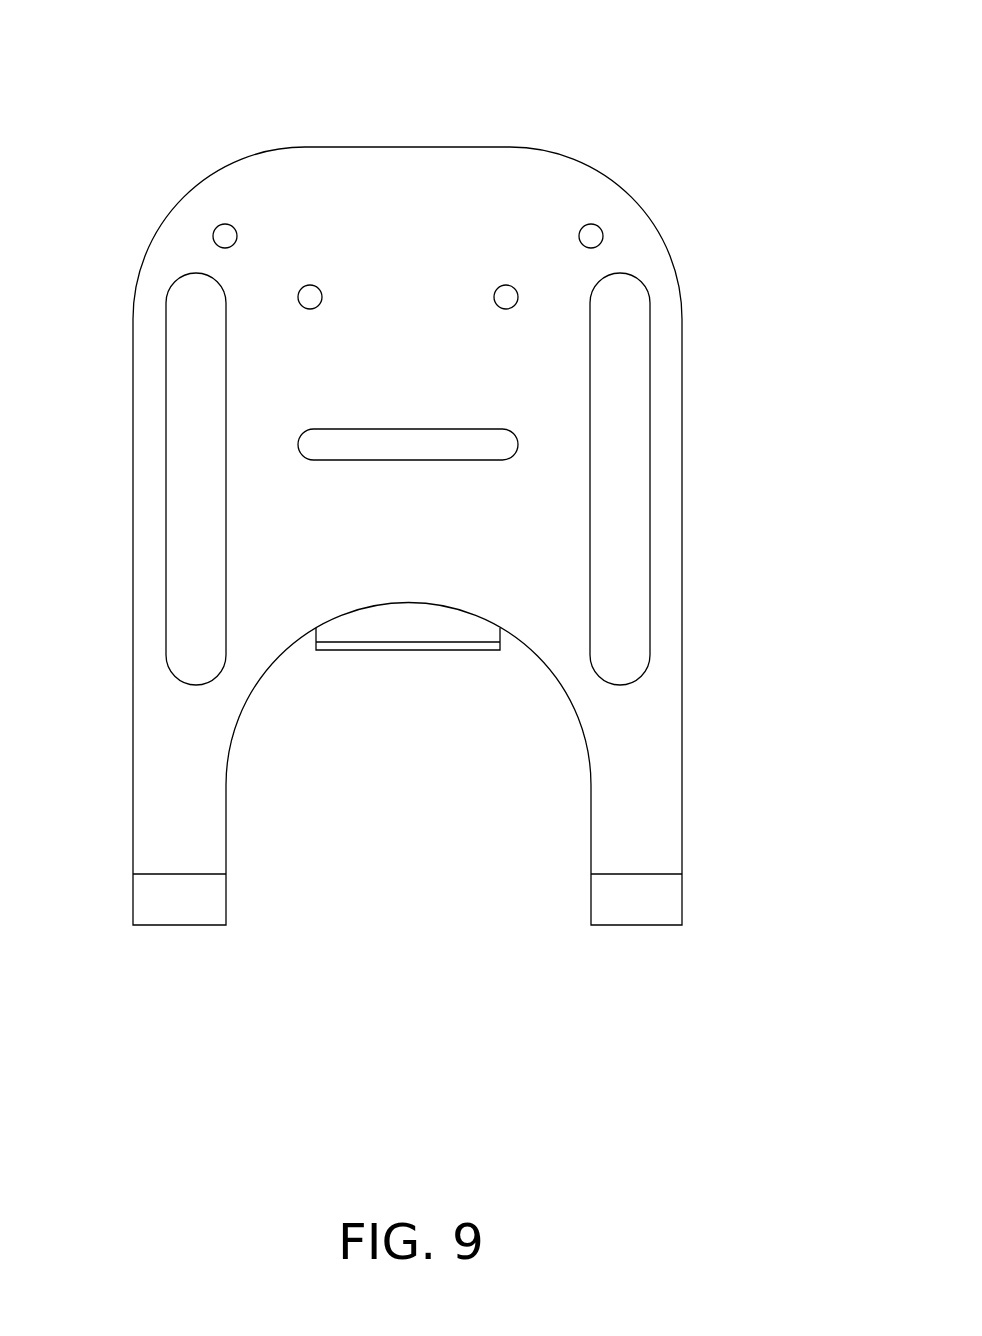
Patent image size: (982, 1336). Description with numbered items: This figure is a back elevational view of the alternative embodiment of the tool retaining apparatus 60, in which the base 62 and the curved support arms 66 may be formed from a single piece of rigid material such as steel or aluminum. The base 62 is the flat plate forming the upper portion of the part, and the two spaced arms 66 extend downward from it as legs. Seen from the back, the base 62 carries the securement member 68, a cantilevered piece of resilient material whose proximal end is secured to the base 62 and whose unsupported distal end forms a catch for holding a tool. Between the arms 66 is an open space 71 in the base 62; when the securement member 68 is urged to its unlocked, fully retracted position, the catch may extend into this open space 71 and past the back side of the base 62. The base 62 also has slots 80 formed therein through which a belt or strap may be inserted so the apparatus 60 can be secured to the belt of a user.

The tool retaining apparatus 60 is at (659, 80).
The base 62 is at (427, 378).
The curved support arms 66 is at (670, 906).
The securement member 68 is at (405, 615).
The open space 71 is at (372, 755).
The slots 80 is at (640, 448).